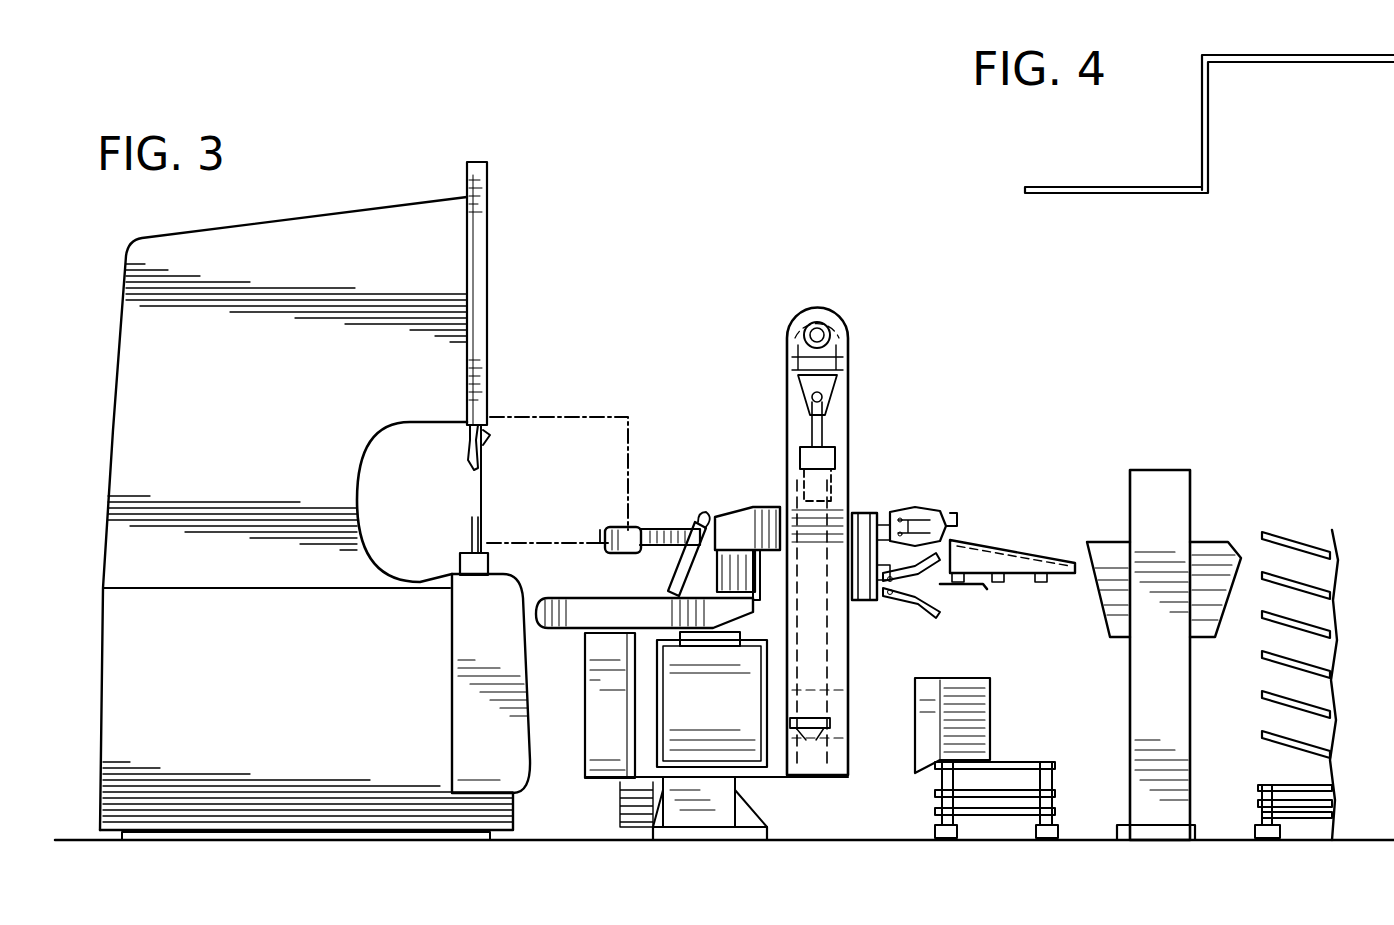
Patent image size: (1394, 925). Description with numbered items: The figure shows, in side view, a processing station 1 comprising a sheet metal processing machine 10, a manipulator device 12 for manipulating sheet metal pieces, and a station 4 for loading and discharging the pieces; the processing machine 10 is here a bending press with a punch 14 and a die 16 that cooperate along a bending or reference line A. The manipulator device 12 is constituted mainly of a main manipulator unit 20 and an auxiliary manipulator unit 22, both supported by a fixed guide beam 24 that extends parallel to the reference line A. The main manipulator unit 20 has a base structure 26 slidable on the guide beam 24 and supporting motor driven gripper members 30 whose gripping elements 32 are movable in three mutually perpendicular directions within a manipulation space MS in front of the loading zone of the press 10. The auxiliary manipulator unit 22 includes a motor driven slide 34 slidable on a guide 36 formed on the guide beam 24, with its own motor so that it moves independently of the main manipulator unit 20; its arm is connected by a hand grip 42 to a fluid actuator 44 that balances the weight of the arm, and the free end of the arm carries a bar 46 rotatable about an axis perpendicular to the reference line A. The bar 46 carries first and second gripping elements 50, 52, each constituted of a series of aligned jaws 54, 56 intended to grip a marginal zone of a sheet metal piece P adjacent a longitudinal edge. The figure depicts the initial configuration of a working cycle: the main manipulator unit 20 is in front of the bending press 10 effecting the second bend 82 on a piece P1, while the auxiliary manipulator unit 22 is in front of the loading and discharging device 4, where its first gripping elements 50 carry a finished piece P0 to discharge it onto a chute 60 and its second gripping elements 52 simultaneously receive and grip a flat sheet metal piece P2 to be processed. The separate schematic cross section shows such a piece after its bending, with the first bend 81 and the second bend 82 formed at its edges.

In FIG. 3, the processing station 1 is at (792, 296).
In FIG. 3, the station for loading and discharging the sheet metal pieces 4 is at (1196, 488).
In FIG. 3, the sheet metal processing machine 10 is at (312, 212).
In FIG. 3, the manipulator device 12 is at (845, 305).
In FIG. 3, the punch 14 is at (468, 490).
In FIG. 3, the die 16 is at (468, 540).
In FIG. 3, the main manipulator unit 20 is at (716, 456).
In FIG. 3, the auxiliary manipulator unit 22 is at (810, 732).
In FIG. 3, the guide beam 24 is at (722, 714).
In FIG. 3, the base structure 26 is at (610, 693).
In FIG. 3, the gripper members 30 is at (698, 522).
In FIG. 3, the gripping elements 32 is at (628, 526).
In FIG. 3, the slide 34 is at (835, 682).
In FIG. 3, the guide 36 is at (790, 432).
In FIG. 3, the hand grip 42 is at (838, 370).
In FIG. 3, the fluid actuator 44 is at (851, 468).
In FIG. 3, the bar 46 is at (862, 600).
In FIG. 3, the first gripping elements 50 is at (940, 478).
In FIG. 3, the second gripping elements 52 is at (936, 592).
In FIG. 3, the jaws 54 is at (906, 510).
In FIG. 3, the jaws 56 is at (896, 604).
In FIG. 3, the chute 60 is at (1022, 546).
In FIG. 4, the first bend 81 is at (1208, 193).
In FIG. 4, the second bend 82 is at (1200, 55).
In FIG. 4, the sheet metal piece P is at (1236, 98).
In FIG. 3, the finished piece P0 is at (958, 514).
In FIG. 3, the piece P1 is at (600, 526).
In FIG. 3, the flat sheet metal piece P2 is at (972, 590).
In FIG. 3, the reference line A is at (480, 517).
In FIG. 3, the manipulation space MS is at (548, 476).